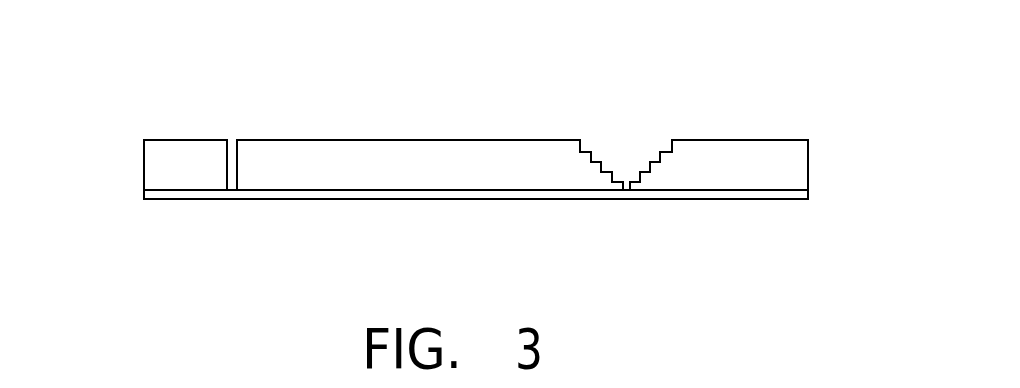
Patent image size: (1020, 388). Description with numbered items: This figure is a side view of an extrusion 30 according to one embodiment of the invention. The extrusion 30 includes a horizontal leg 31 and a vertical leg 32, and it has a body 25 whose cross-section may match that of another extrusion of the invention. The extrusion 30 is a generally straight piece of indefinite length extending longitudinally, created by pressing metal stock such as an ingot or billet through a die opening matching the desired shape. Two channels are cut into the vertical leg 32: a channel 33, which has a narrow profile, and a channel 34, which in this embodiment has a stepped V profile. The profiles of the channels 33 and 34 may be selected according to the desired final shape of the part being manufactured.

The extrusion 30 is at (703, 63).
The horizontal leg 31 is at (145, 192).
The vertical leg 32 is at (160, 164).
The channel 33 is at (235, 143).
The channel 34 is at (623, 158).
The body 25 is at (773, 180).